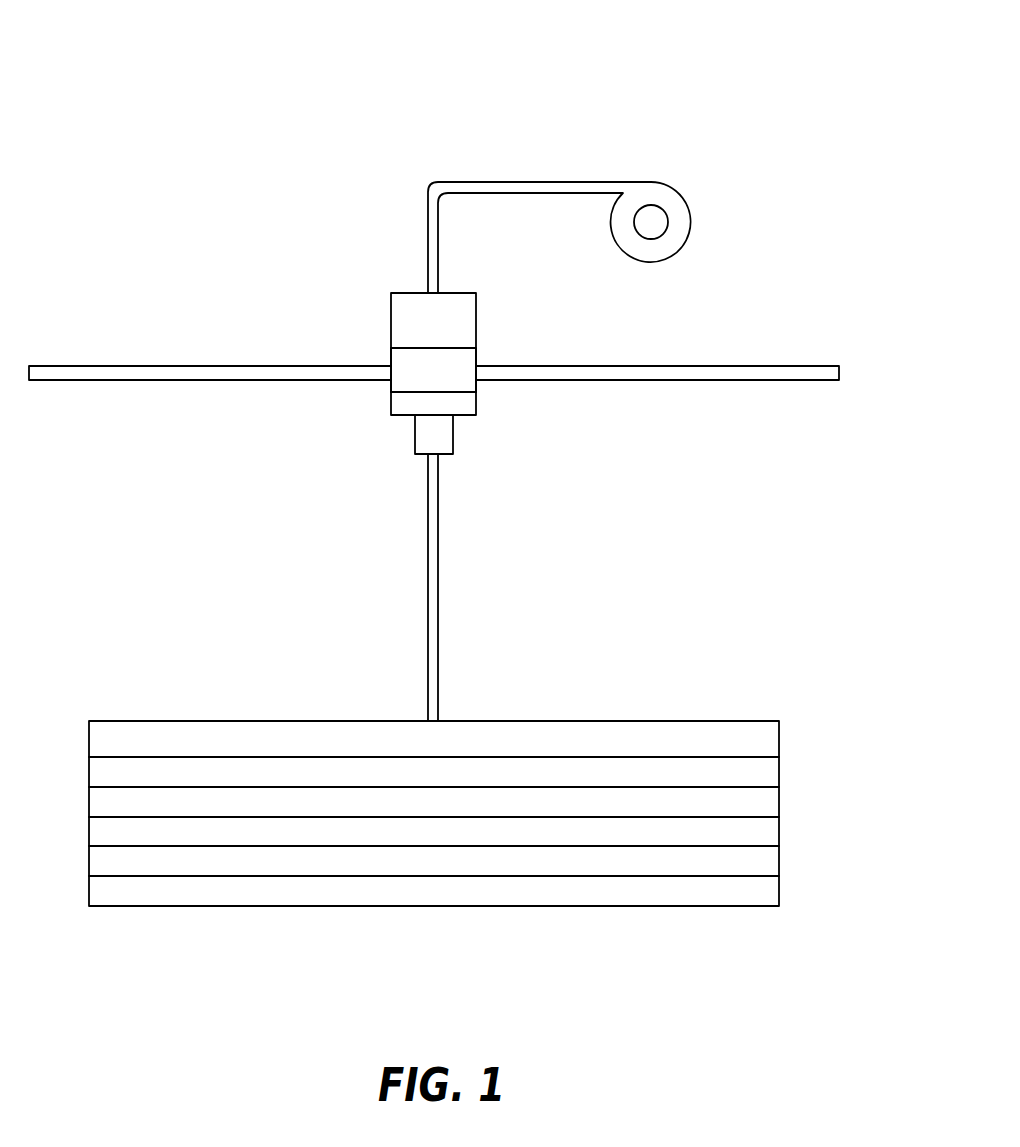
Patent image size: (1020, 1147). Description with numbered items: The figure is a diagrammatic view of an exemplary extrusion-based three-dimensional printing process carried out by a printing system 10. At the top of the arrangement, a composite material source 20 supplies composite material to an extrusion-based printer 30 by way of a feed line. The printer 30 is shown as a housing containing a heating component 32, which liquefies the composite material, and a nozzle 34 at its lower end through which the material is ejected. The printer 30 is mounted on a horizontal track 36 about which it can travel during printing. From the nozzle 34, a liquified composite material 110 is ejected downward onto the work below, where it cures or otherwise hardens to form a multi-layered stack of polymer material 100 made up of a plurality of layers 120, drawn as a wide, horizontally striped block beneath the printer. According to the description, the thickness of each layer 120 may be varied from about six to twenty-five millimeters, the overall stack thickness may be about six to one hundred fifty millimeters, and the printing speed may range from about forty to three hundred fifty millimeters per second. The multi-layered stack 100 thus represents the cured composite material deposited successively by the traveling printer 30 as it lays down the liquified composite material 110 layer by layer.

The 3D printing system 10 is at (135, 33).
The composite material source 20 is at (682, 223).
The extrusion-based 3D printer 30 is at (457, 318).
The heating component 32 is at (398, 362).
The nozzle 34 is at (442, 447).
The track 36 is at (128, 366).
The multi-layered stack of polymer material 100 is at (87, 649).
The liquified composite material 110 is at (429, 592).
The layers 120 is at (752, 743).